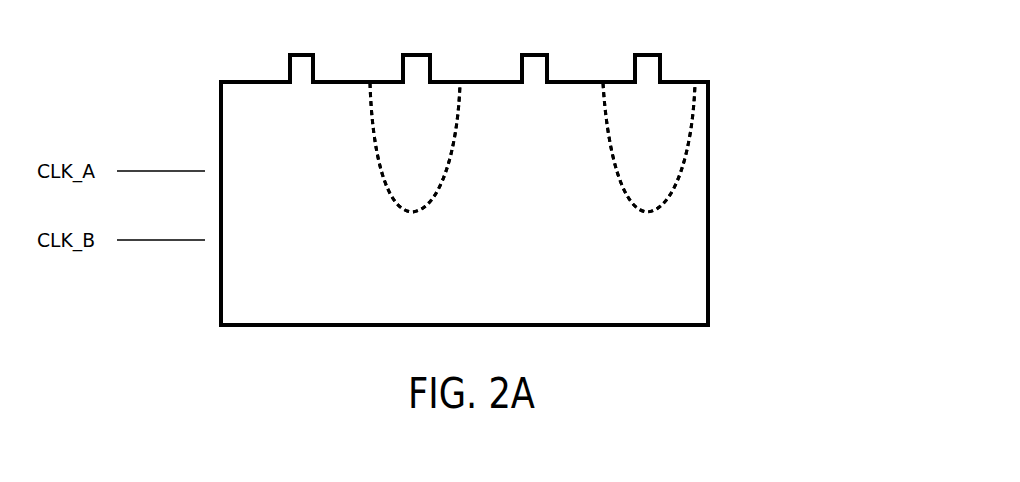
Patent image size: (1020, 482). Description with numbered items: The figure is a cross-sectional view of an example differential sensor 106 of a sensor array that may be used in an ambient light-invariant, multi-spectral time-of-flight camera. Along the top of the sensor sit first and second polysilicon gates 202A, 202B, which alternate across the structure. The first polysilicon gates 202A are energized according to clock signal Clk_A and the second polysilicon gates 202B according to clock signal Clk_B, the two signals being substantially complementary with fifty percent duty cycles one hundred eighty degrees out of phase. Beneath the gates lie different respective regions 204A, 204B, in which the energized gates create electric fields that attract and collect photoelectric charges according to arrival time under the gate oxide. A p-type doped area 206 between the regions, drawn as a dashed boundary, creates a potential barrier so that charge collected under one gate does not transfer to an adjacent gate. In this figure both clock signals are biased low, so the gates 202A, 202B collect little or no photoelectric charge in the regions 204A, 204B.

The differential sensor 106 is at (813, 37).
The first polysilicon gate 202A is at (269, 21).
The second polysilicon gate 202B is at (389, 18).
The region 204A is at (330, 285).
The region 204B is at (437, 143).
The p-type doped area 206 is at (413, 215).